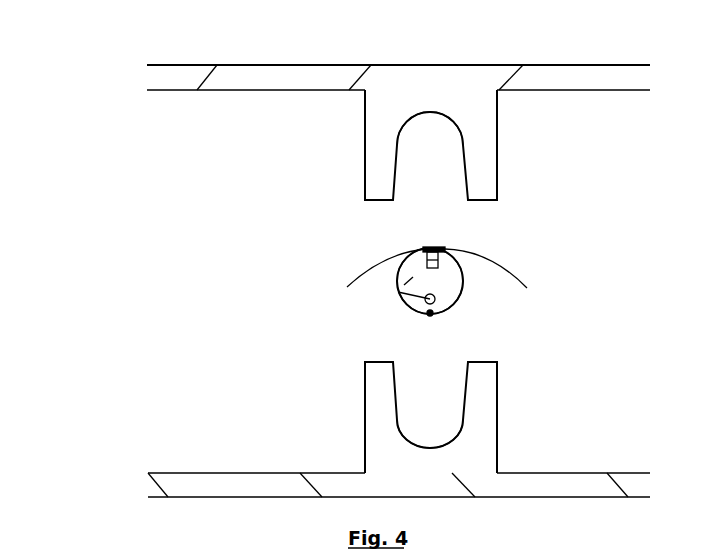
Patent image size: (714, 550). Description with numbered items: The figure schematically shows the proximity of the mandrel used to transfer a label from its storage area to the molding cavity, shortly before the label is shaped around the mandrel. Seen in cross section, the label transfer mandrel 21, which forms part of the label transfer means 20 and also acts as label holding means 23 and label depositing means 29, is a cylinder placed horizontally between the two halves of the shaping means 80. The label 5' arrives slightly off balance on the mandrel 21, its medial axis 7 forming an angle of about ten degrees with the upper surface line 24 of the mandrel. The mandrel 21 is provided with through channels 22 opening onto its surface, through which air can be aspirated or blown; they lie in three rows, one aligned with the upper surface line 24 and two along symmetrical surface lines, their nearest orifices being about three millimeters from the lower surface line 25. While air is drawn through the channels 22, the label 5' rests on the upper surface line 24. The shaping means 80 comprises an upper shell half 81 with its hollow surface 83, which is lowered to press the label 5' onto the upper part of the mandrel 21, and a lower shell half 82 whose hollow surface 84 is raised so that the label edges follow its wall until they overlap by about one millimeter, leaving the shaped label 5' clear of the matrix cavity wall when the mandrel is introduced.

The shaping means 80 is at (119, 343).
The upper shell half 81 is at (455, 110).
The lower shell half 82 is at (468, 413).
The hollow surface 83 is at (417, 113).
The hollow surface of the lower shell half 84 is at (450, 438).
The label 5' is at (507, 257).
The medial axis of the label 7 is at (437, 247).
The label transfer means 20 is at (398, 293).
The label transfer mandrel 21 is at (430, 281).
The label holding means 23 is at (432, 260).
The label depositing means 29 is at (414, 288).
The through channel 22 is at (408, 260).
The upper surface line of the mandrel 24 is at (430, 247).
The lower surface line of the mandrel 25 is at (430, 313).